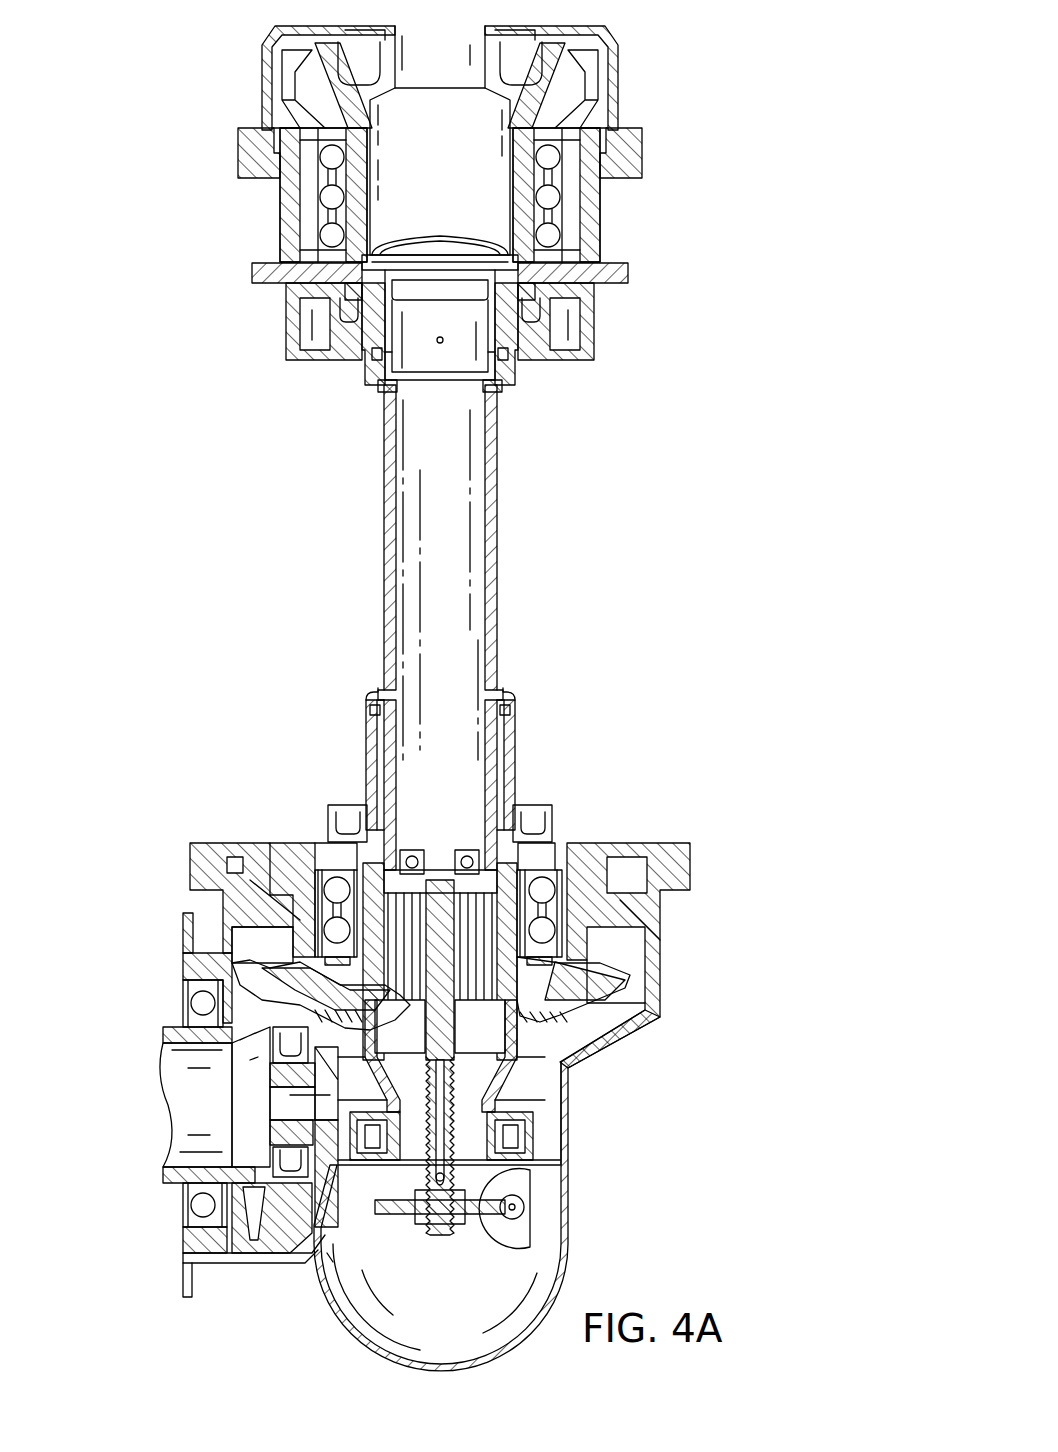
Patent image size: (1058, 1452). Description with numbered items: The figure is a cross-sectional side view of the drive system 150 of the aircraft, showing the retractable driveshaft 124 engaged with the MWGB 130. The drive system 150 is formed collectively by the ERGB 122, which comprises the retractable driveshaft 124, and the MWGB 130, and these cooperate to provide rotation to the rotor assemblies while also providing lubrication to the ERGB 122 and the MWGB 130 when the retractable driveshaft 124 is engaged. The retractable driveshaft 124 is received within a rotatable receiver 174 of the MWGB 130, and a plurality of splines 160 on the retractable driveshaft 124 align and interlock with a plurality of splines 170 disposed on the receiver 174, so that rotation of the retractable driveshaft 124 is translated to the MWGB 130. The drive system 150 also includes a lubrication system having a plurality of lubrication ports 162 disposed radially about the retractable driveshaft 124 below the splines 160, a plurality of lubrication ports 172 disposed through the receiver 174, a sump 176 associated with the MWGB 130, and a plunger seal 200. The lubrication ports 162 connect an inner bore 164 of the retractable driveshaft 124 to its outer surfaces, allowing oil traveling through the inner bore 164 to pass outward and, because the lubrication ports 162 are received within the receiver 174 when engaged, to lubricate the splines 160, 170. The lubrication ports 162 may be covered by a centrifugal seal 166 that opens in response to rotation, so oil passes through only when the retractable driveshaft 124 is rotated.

The drive system 150 is at (503, 226).
The MWGB 130 is at (620, 92).
The receiver 174 is at (370, 138).
The splines 170 is at (400, 300).
The plunger seal 200 is at (470, 240).
The lubrication ports 172 is at (337, 270).
The sump 176 is at (582, 326).
The lubrication ports 162 is at (365, 340).
The splines 160 is at (503, 327).
The centrifugal seal 166 is at (377, 383).
The retractable driveshaft 124 is at (500, 533).
The inner bore 164 is at (467, 603).
The ERGB 122 is at (569, 1205).